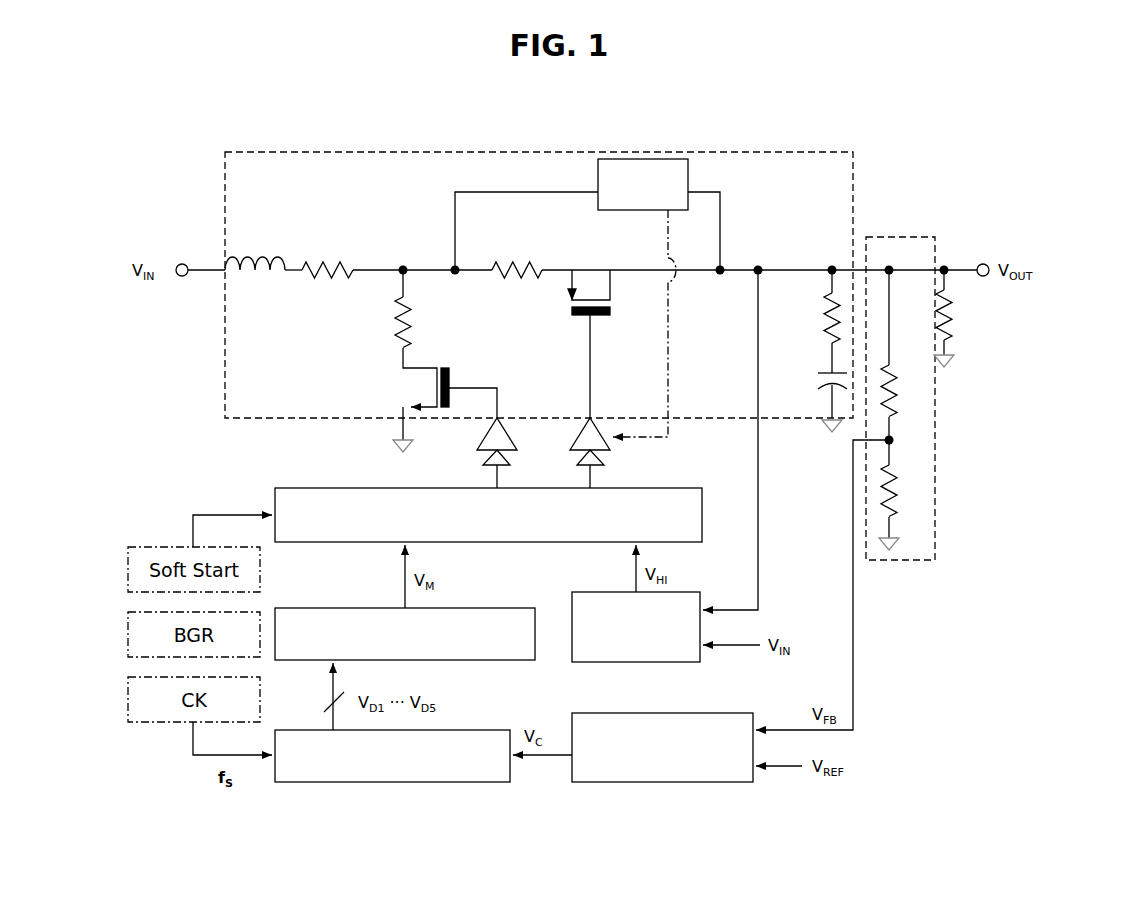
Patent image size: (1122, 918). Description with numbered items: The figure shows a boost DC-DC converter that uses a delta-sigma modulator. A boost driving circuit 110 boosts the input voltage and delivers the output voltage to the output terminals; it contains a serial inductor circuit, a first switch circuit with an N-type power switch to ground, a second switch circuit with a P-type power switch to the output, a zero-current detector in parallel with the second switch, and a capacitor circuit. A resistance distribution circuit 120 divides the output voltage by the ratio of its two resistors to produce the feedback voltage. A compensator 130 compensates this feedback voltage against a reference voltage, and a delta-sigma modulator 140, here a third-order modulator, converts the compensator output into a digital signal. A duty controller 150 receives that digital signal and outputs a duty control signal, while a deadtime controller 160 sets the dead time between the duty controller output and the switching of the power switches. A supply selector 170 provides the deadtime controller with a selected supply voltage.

The boost driving circuit 110 is at (538, 151).
The resistance distribution circuit 120 is at (893, 237).
The compensator 130 is at (660, 782).
The delta-sigma modulator 140 is at (391, 782).
The duty controller 150 is at (333, 608).
The deadtime controller 160 is at (331, 488).
The supply selector 170 is at (588, 663).